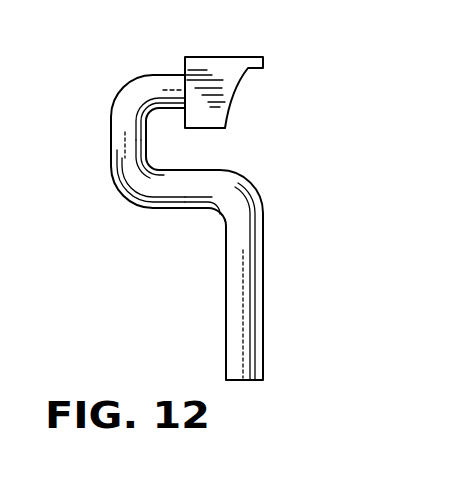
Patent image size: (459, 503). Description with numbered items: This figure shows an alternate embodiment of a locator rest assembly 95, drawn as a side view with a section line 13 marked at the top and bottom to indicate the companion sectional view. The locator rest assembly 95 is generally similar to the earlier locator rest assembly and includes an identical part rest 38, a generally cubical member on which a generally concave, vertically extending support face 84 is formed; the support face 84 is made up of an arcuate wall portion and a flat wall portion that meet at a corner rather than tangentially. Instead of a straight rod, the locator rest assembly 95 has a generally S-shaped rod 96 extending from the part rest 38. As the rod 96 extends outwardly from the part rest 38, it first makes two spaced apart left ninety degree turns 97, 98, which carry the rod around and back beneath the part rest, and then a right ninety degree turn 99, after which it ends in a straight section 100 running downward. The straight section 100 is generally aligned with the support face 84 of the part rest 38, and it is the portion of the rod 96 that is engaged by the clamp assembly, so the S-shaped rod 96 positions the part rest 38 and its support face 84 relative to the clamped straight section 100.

The section line 13 is at (268, 32).
The part rest 38 is at (225, 104).
The support face 84 is at (245, 74).
The locator rest assembly 95 is at (338, 170).
The S-shaped rod 96 is at (256, 223).
The first left ninety degree turn 97 is at (142, 90).
The second left ninety degree turn 98 is at (137, 188).
The right ninety degree turn 99 is at (224, 186).
The straight section 100 is at (253, 309).